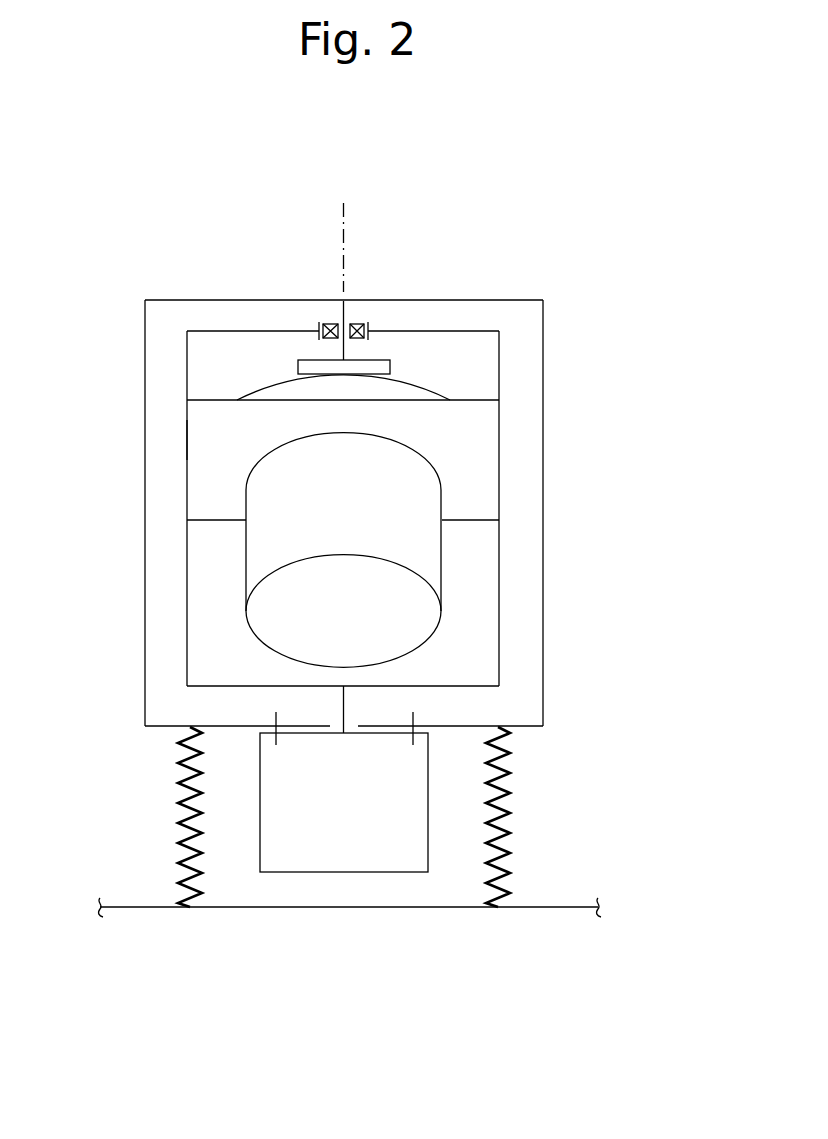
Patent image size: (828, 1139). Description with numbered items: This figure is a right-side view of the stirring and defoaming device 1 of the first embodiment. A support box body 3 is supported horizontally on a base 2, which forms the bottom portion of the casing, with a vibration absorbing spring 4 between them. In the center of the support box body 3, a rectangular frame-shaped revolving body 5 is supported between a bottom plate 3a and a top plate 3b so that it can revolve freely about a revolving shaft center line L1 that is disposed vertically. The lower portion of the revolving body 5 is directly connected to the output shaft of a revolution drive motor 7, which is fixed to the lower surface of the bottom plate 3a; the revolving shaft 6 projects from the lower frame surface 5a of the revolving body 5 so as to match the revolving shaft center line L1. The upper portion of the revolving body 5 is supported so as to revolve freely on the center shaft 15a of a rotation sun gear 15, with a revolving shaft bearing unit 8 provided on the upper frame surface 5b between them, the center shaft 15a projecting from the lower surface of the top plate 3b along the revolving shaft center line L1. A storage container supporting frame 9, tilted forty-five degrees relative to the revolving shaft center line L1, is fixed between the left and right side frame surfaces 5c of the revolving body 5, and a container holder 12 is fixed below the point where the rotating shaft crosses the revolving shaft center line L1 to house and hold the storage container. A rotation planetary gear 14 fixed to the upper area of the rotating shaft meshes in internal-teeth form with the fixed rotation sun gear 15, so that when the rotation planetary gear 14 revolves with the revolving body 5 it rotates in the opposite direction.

The stirring and defoaming device 1 is at (633, 276).
The base 2 is at (130, 907).
The support box body 3 is at (120, 537).
The bottom plate 3a is at (160, 728).
The top plate 3b is at (178, 300).
The vibration absorbing spring 4 is at (180, 810).
The revolving body 5 is at (504, 455).
The lower frame surface 5a is at (467, 684).
The upper frame surface 5b is at (465, 332).
The side frame surface 5c is at (187, 598).
The revolving shaft 6 is at (345, 700).
The revolution drive motor 7 is at (262, 808).
The revolving shaft bearing unit 8 is at (331, 322).
The storage container supporting frame 9 is at (187, 440).
The container holder 12 is at (428, 544).
The rotation planetary gear 14 is at (420, 392).
The rotation sun gear 15 is at (387, 366).
The center shaft 15a is at (349, 324).
The revolving shaft center line L1 is at (348, 210).